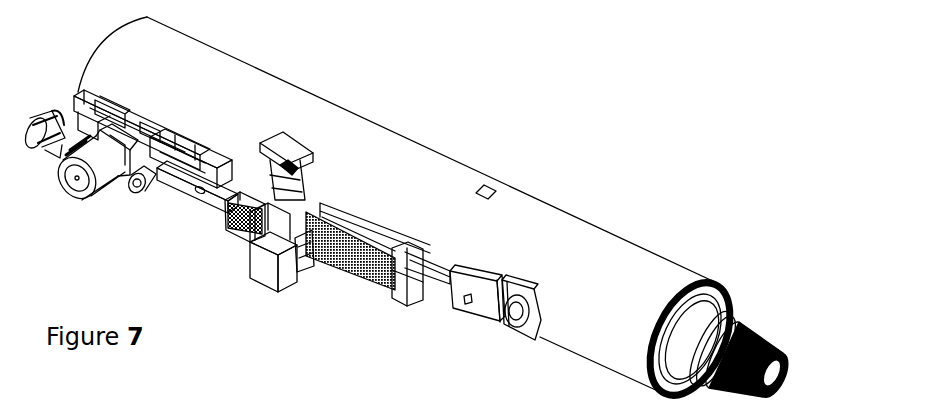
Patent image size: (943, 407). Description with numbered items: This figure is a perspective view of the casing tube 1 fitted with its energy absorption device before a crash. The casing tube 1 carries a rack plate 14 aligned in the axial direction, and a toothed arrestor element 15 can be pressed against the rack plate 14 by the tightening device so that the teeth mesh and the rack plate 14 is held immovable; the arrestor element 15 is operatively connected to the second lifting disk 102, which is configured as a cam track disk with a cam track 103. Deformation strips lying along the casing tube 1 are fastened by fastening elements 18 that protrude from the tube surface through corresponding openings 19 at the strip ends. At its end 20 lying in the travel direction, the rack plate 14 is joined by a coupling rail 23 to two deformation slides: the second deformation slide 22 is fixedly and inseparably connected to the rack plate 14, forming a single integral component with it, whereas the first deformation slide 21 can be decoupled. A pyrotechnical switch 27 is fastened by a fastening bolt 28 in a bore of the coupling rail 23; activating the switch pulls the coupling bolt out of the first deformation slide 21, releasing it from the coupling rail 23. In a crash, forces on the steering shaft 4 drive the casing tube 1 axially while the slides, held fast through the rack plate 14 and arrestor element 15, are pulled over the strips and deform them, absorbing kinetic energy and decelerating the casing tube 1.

The casing tube 1 is at (667, 247).
The steering shaft 4 is at (752, 317).
The rack plate 14 is at (373, 282).
The arrestor element 15 is at (305, 267).
The fastening elements 18 is at (515, 328).
The openings 19 is at (507, 328).
The end of the rack plate 20 is at (230, 217).
The first deformation slide 21 is at (133, 110).
The second deformation slide 22 is at (217, 153).
The coupling rail 23 is at (185, 182).
The pyrotechnical switch 27 is at (77, 205).
The fastening bolt 28 is at (137, 193).
The second lifting disk 102 is at (247, 235).
The cam track 103 is at (313, 175).